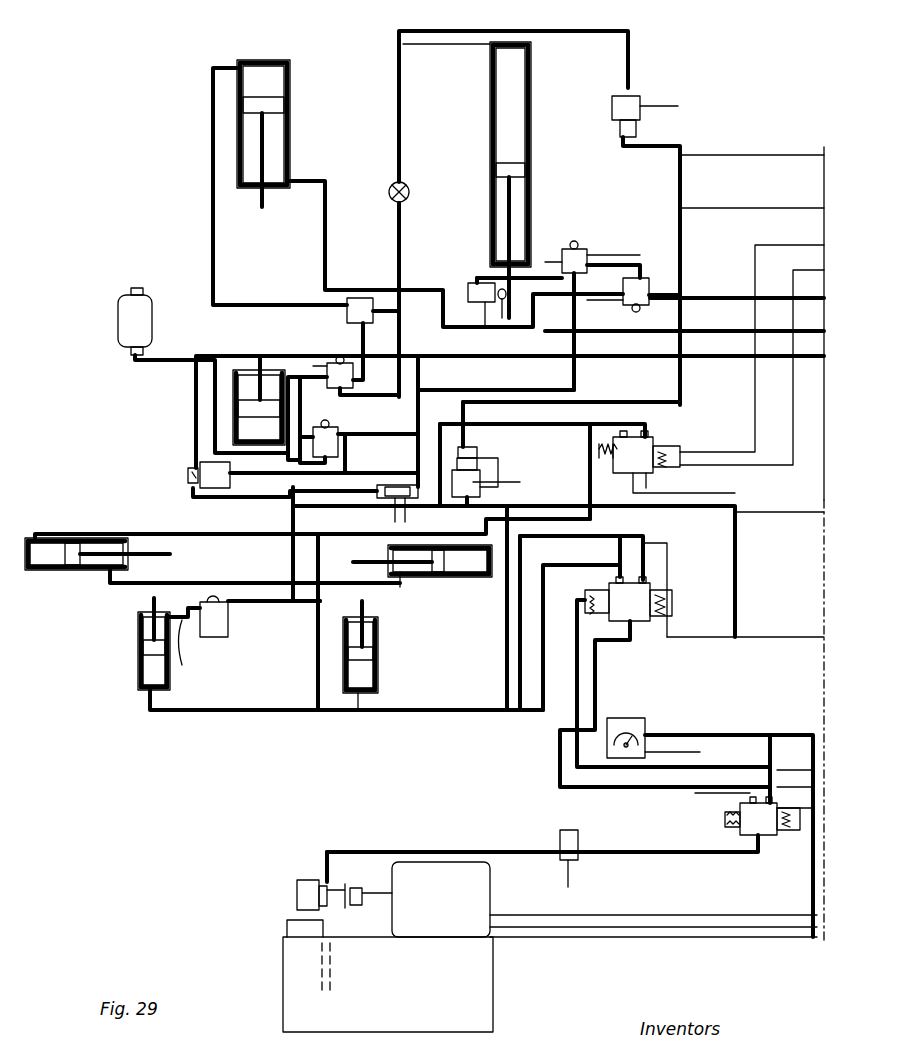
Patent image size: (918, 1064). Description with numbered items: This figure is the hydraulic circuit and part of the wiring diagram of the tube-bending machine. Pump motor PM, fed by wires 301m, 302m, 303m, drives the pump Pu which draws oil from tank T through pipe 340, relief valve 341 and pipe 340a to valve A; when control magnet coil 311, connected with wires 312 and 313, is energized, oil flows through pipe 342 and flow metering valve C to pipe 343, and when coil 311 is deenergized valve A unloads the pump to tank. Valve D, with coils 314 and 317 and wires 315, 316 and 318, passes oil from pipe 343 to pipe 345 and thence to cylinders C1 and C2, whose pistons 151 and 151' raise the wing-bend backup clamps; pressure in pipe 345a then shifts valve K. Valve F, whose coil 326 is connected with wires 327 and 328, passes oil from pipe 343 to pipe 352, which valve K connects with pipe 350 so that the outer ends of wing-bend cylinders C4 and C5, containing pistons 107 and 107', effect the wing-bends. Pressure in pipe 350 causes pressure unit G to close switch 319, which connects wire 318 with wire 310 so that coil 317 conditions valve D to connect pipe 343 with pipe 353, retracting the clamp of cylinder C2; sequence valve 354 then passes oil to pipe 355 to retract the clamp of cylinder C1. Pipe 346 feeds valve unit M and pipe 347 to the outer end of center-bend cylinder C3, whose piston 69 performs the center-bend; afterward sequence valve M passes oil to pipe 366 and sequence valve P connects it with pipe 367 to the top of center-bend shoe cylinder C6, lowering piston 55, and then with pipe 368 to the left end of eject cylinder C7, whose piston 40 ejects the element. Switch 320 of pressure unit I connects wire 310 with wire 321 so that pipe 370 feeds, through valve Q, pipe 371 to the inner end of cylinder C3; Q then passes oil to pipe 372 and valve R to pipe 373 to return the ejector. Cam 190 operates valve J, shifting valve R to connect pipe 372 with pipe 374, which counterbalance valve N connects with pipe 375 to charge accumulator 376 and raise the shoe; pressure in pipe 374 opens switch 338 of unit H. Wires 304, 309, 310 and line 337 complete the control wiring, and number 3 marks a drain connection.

The center-bend cylinder C3 is at (290, 82).
The piston 69 is at (284, 104).
The pipe 347 is at (280, 186).
The pipe 371 is at (456, 254).
The pipe 368 is at (436, 44).
The eject cylinder C7 is at (490, 154).
The piston 40 is at (496, 172).
The pressure unit I is at (640, 103).
The switch 320 is at (618, 125).
The wire 321 is at (752, 536).
The wire 310 is at (678, 222).
The wire 328 is at (752, 337).
The wire 327 is at (728, 370).
The pipe 370 is at (737, 286).
The pipe 346 is at (510, 332).
The valve R is at (558, 303).
The pipe 373 is at (545, 262).
The pipe 372 is at (600, 263).
The sequence valve Q is at (633, 285).
The conduit 3 is at (623, 317).
The valve J is at (470, 292).
The cam 190 is at (507, 300).
The sequence valve M is at (348, 323).
The pipe 366 is at (375, 351).
The sequence valve P is at (356, 364).
The pipe 367 is at (293, 377).
The accumulator 376 is at (118, 316).
The pipe 375 is at (168, 362).
The center-bend shoe cylinder C6 is at (258, 368).
The piston 55 is at (287, 415).
The counterbalance valve N is at (359, 443).
The conduit 337 is at (196, 425).
The pipe 374 is at (574, 372).
The unit H is at (198, 466).
The switch 338 is at (188, 484).
The valve K is at (397, 484).
The pressure unit G is at (480, 489).
The switch 319 is at (466, 453).
The wire 318 is at (498, 462).
The pipe 352 is at (562, 425).
The valve F is at (650, 437).
The control magnet coil 326 is at (685, 456).
The wire 304 is at (527, 560).
The pipe 353 is at (290, 566).
The wing-bend cylinder C4 is at (45, 570).
The piston 107 is at (117, 535).
The pipe 350 is at (312, 608).
The wing-bend cylinder C5 is at (485, 580).
The pipe 345a is at (377, 551).
The piston 107' is at (458, 563).
The valve D is at (645, 583).
The control magnet coil 317 is at (672, 606).
The control magnet coil 314 is at (600, 615).
The pipe 343 is at (735, 568).
The wire 309 is at (745, 625).
The cylinder C1 is at (140, 648).
The piston 151 is at (126, 643).
The sequence valve 354 is at (212, 637).
The pipe 355 is at (197, 654).
The pipe 345 is at (392, 712).
The cylinder C2 is at (378, 636).
The piston 151' is at (386, 640).
The wire 315 is at (560, 737).
The wire 316 is at (577, 762).
The flow metering valve C is at (659, 728).
The pipe 342 is at (729, 821).
The wire 313 is at (795, 806).
The valve A is at (563, 816).
The control magnet coil 311 is at (775, 838).
The wire 312 is at (795, 835).
The pipe 340 is at (505, 850).
The pipe 340a is at (671, 834).
The relief valve 341 is at (570, 822).
The pump Pu is at (298, 882).
The pump motor PM is at (491, 870).
The tank T is at (494, 985).
The wire 301m is at (653, 903).
The wire 302m is at (653, 911).
The wire 303m is at (653, 949).